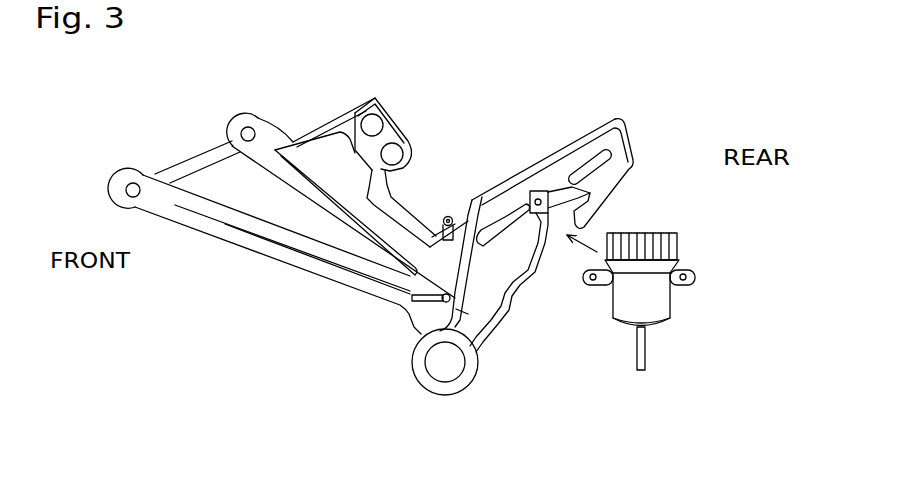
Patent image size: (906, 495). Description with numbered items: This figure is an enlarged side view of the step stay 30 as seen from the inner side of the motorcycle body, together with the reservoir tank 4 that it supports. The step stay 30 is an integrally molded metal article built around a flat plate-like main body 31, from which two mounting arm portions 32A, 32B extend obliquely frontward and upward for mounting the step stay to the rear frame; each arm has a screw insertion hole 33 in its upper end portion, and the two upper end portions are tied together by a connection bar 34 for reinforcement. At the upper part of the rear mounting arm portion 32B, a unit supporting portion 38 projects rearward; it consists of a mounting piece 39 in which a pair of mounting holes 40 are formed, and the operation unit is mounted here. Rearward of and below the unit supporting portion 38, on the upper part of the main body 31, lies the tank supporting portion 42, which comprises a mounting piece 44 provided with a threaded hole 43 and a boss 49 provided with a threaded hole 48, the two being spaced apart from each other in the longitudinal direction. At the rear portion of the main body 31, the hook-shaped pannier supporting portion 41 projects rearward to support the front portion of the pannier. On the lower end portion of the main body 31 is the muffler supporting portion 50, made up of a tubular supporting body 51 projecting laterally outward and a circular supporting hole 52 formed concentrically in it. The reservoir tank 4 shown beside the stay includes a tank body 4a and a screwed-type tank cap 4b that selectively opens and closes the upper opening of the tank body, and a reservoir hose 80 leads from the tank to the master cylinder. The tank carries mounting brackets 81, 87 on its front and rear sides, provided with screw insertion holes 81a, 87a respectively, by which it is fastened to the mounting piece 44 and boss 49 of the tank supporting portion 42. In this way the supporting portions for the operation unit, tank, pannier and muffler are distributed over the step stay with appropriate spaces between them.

The step stay 30 is at (553, 146).
The main body 31 is at (488, 307).
The mounting arm portion 32A is at (253, 247).
The mounting arm portion 32B is at (328, 198).
The screw insertion hole 33 is at (133, 183).
The connection bar 34 is at (193, 160).
The unit supporting portion 38 is at (403, 127).
The mounting piece 39 is at (368, 119).
The mounting hole 40 is at (357, 122).
The pannier supporting portion 41 is at (630, 143).
The tank supporting portion 42 is at (537, 110).
The threaded hole 43 is at (447, 216).
The mounting piece 44 is at (460, 222).
The threaded hole 48 is at (576, 170).
The boss 49 is at (537, 193).
The muffler supporting portion 50 is at (498, 430).
The tubular supporting body 51 is at (462, 380).
The circular supporting hole 52 is at (430, 365).
The reservoir tank 4 is at (663, 330).
The tank body 4a is at (657, 308).
The tank cap 4b is at (660, 240).
The reservoir hose 80 is at (638, 353).
The mounting bracket 81 is at (583, 277).
The screw insertion hole 81a is at (593, 287).
The mounting bracket 87 is at (690, 271).
The screw insertion hole 87a is at (690, 283).